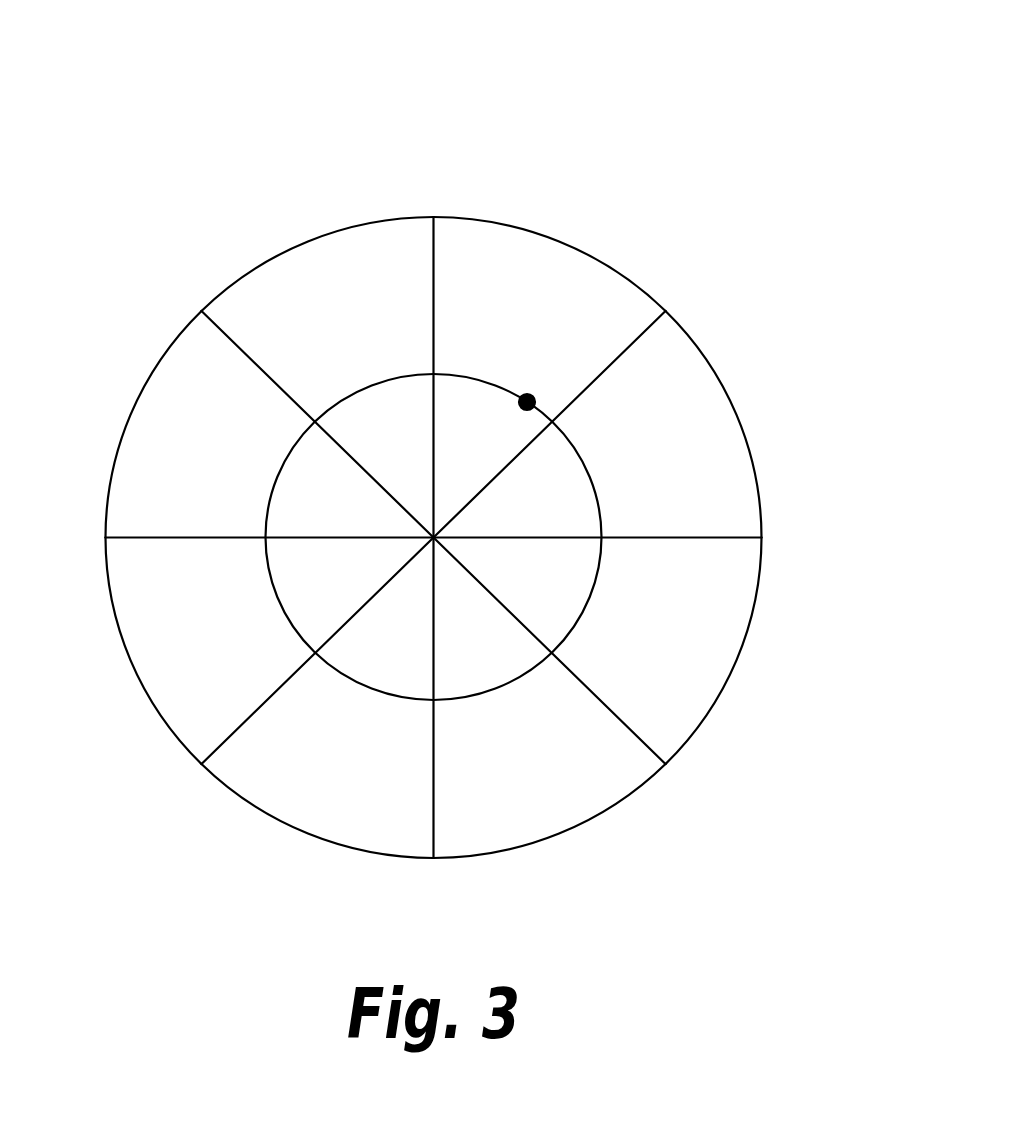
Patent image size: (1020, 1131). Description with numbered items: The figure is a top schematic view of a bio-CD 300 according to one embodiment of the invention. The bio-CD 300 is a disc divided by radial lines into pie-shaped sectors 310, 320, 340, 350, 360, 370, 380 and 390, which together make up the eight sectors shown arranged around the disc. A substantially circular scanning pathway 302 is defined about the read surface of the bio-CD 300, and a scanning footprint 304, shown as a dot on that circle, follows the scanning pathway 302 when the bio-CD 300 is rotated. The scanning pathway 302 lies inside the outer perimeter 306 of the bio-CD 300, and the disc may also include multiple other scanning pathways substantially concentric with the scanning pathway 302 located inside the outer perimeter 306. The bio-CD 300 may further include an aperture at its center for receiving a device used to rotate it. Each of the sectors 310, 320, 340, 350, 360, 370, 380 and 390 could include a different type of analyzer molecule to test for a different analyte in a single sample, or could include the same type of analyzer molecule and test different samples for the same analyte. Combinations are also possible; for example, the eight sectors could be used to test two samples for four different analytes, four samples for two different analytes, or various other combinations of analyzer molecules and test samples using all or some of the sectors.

The bio-CD 300 is at (747, 113).
The scanning pathway 302 is at (370, 383).
The scanning footprint 304 is at (527, 394).
The outer perimeter 306 is at (435, 217).
The sector 310 is at (538, 288).
The sector 320 is at (705, 450).
The sector 340 is at (690, 657).
The sector 350 is at (542, 773).
The sector 360 is at (323, 777).
The sector 370 is at (148, 637).
The sector 380 is at (153, 425).
The sector 390 is at (278, 288).